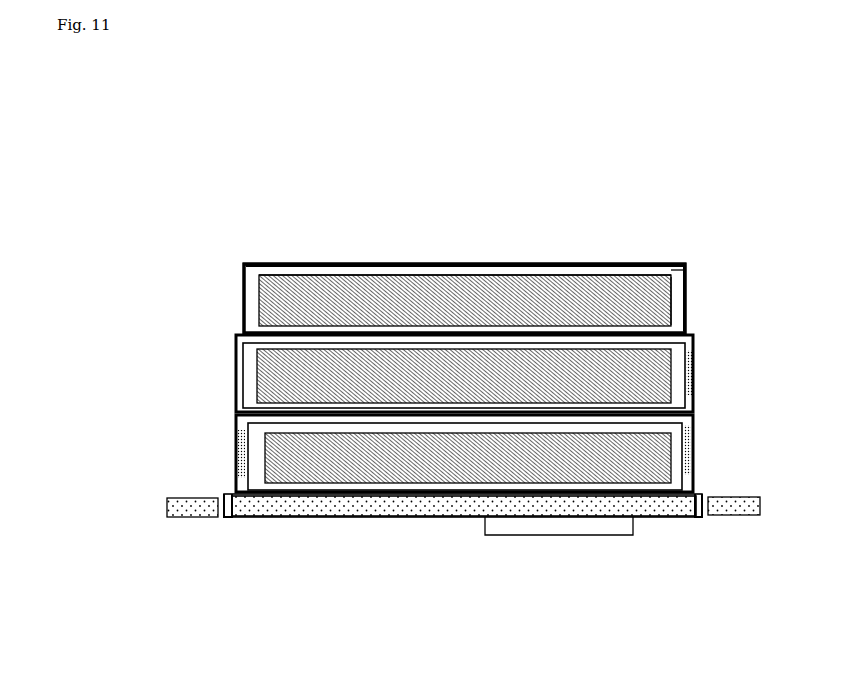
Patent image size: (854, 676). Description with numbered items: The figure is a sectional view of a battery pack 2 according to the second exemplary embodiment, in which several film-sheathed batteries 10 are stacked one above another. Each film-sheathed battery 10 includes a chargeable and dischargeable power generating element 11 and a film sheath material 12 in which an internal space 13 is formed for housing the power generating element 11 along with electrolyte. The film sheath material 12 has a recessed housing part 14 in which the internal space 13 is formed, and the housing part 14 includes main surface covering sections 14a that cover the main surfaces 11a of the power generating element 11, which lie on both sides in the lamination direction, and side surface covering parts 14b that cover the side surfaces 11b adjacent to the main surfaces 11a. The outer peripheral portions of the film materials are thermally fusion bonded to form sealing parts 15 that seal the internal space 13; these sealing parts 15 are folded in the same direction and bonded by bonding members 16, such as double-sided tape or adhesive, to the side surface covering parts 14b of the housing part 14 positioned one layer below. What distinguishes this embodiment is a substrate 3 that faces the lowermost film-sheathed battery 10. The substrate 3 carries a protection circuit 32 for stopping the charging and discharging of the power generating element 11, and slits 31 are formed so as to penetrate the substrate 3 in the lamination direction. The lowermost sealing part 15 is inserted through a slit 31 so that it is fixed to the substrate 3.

The battery pack 2 is at (455, 140).
The substrate 3 is at (368, 515).
The film-sheathed battery 10 is at (160, 261).
The power generating element 11 is at (260, 285).
The film sheath material 12 is at (245, 306).
The main surfaces 11a is at (423, 278).
The side surfaces 11b is at (671, 305).
The internal space 13 is at (583, 268).
The housing part 14 is at (767, 226).
The main surface covering sections 14a is at (663, 255).
The side surface covering parts 14b is at (687, 272).
The sealing part 15 is at (694, 358).
The bonding member 16 is at (693, 393).
The slit 31 is at (733, 472).
The protection circuit 32 is at (553, 525).